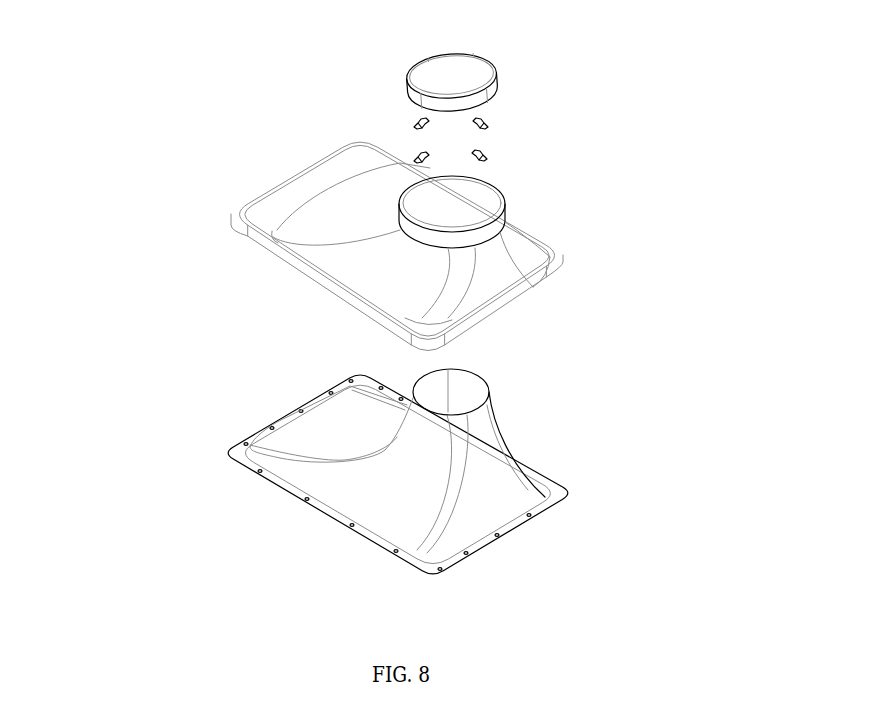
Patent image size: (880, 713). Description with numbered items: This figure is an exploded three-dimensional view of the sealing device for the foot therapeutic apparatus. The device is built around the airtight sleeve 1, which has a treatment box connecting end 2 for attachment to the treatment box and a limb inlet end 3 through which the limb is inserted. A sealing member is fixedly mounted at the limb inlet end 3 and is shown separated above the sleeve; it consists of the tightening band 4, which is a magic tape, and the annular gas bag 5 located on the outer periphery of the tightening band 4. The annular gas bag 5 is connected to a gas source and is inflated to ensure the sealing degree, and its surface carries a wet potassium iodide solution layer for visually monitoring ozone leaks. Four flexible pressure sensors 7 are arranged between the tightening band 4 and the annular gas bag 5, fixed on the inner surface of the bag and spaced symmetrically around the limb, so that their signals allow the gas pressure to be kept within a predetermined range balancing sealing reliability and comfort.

The airtight sleeve 1 is at (490, 479).
The treatment box connecting end 2 is at (310, 508).
The limb inlet end 3 is at (472, 397).
The tightening band 4 is at (483, 63).
The annular gas bag 5 is at (433, 242).
The pressure sensor 7 is at (488, 152).